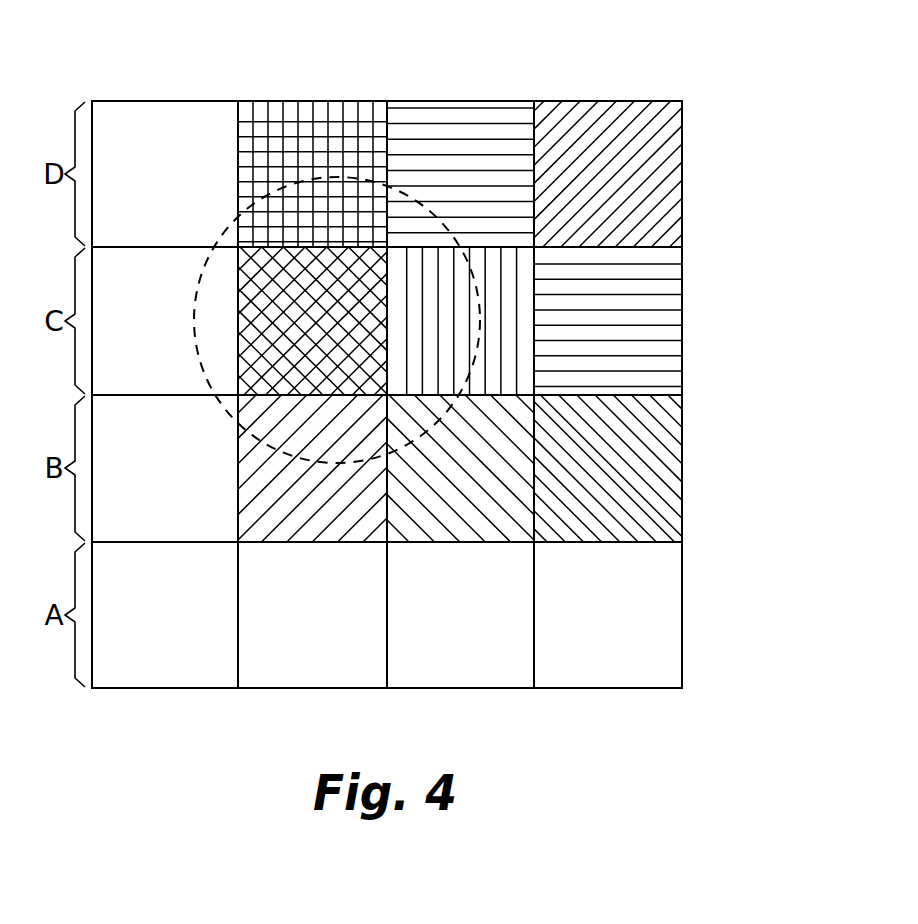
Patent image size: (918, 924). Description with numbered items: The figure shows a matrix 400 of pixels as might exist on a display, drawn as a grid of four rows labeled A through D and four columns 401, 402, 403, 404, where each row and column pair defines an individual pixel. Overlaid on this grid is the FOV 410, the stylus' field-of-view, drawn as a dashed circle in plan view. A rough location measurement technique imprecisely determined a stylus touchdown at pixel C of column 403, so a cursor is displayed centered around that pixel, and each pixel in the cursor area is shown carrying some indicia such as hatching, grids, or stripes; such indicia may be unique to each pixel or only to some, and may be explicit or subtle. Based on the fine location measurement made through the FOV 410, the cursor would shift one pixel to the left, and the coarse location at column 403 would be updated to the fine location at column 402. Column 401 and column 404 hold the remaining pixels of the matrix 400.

The array of pixels / grid 400 is at (679, 43).
The pixel column 401 is at (165, 425).
The pixel column 402 is at (303, 110).
The pixel column 403 is at (462, 113).
The pixel column 404 is at (582, 113).
The FOV 410 is at (407, 107).